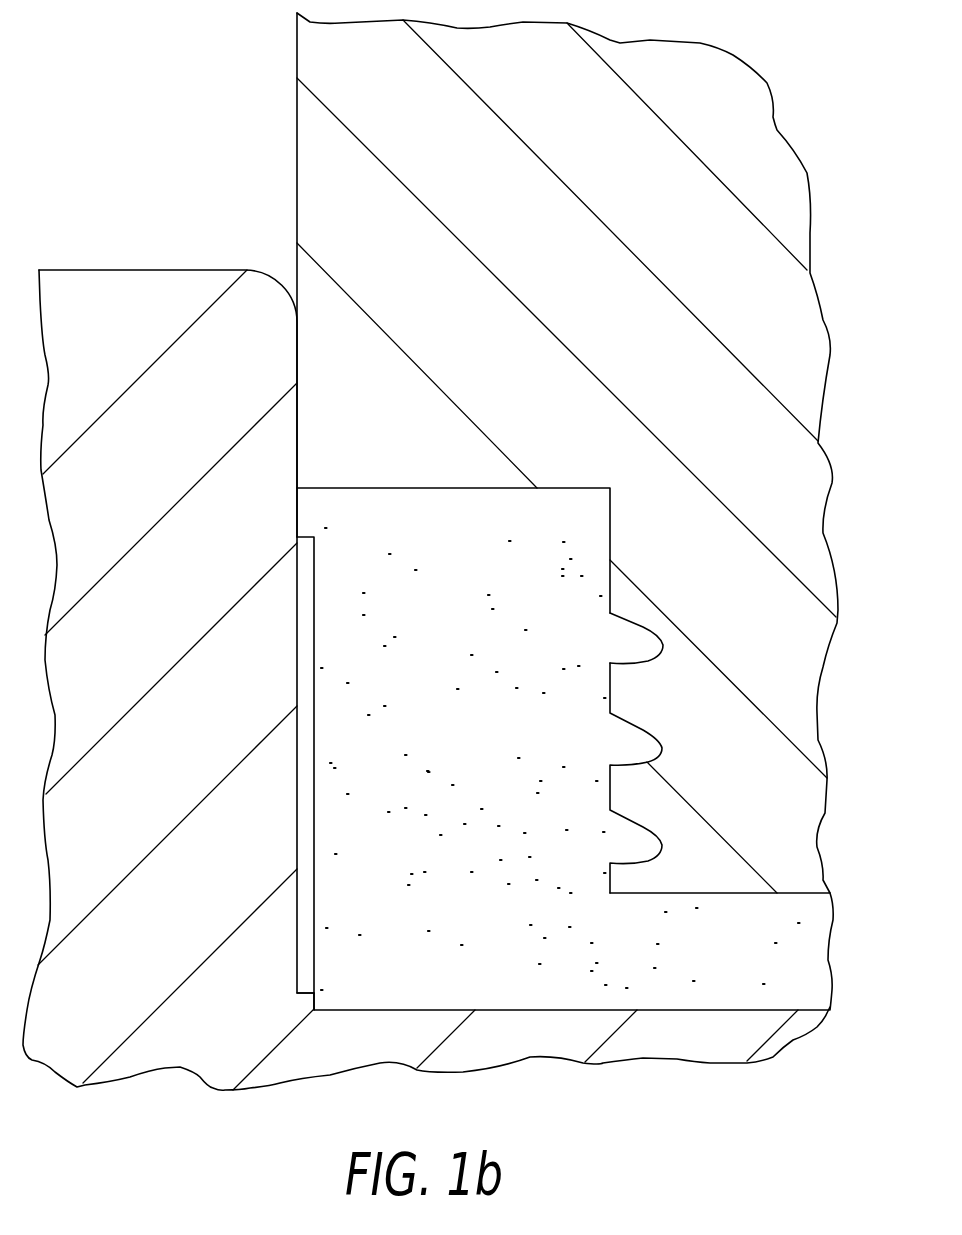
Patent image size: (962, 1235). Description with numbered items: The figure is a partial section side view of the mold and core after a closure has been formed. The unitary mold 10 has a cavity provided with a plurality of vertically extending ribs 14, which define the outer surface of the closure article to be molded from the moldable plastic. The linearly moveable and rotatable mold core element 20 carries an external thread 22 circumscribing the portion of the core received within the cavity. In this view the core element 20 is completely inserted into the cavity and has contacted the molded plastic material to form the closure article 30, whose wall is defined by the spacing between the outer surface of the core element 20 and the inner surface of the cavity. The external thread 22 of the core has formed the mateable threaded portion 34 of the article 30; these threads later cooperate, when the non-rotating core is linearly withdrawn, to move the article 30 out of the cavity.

The unitary mold 10 is at (136, 258).
The vertically extending ribs 14 is at (303, 668).
The mold core element 20 is at (290, 89).
The external thread 22 is at (627, 692).
The closure article 30 is at (519, 504).
The mateable threaded portion 34 is at (640, 645).